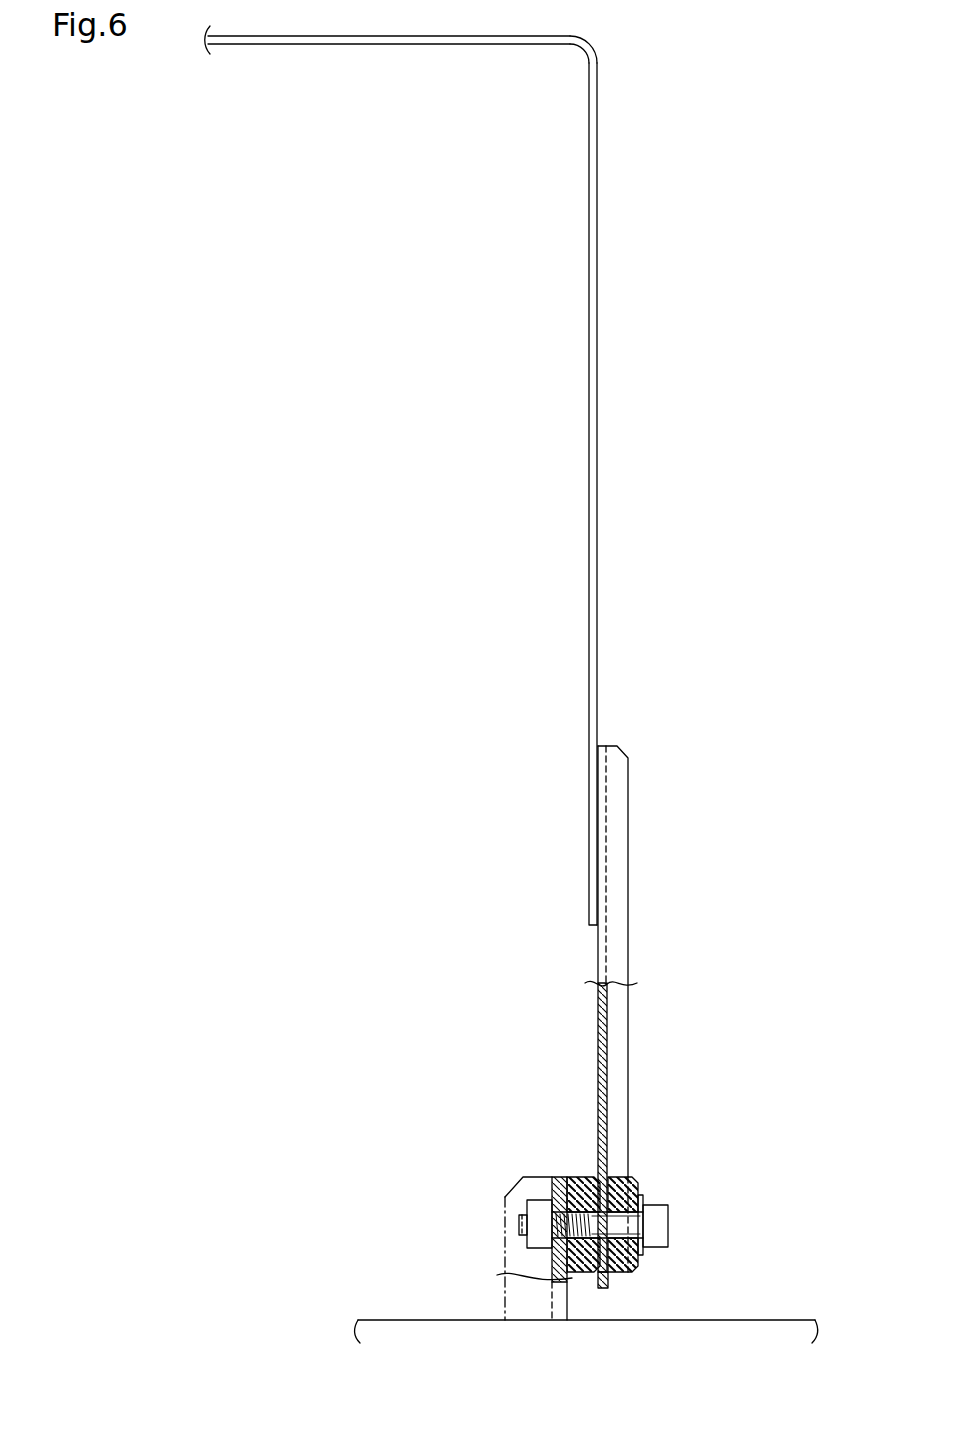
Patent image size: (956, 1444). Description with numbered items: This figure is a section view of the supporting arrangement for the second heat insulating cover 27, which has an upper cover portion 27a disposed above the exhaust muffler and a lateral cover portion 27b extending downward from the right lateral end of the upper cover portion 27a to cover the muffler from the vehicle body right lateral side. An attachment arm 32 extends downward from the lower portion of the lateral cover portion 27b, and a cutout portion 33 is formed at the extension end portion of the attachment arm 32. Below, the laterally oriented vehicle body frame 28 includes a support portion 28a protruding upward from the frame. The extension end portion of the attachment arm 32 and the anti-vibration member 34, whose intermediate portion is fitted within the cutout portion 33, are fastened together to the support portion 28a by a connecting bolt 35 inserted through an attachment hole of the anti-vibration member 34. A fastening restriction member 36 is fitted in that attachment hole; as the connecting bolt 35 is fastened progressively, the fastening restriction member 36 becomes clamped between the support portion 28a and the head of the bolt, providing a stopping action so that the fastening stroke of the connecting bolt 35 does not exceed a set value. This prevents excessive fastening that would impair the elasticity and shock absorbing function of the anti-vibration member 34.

The second heat insulating cover 27 is at (479, 475).
The upper cover portion 27a is at (406, 45).
The lateral cover portion 27b is at (589, 470).
The laterally oriented vehicle body frame 28 is at (767, 1320).
The support portion 28a is at (554, 1176).
The attachment arm 32 is at (598, 1052).
The cutout portion 33 is at (610, 1279).
The anti-vibration member 34 is at (580, 1177).
The connecting bolt 35 is at (668, 1225).
The fastening restriction member 36 is at (632, 1177).